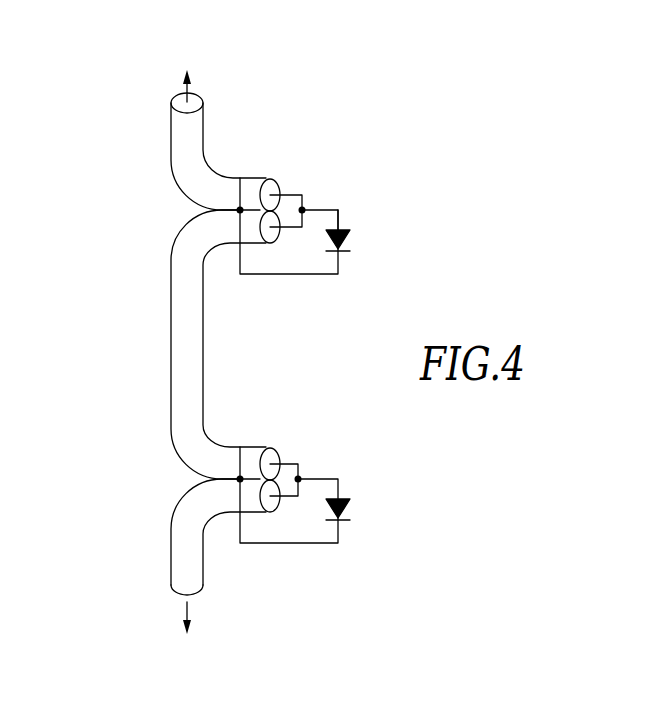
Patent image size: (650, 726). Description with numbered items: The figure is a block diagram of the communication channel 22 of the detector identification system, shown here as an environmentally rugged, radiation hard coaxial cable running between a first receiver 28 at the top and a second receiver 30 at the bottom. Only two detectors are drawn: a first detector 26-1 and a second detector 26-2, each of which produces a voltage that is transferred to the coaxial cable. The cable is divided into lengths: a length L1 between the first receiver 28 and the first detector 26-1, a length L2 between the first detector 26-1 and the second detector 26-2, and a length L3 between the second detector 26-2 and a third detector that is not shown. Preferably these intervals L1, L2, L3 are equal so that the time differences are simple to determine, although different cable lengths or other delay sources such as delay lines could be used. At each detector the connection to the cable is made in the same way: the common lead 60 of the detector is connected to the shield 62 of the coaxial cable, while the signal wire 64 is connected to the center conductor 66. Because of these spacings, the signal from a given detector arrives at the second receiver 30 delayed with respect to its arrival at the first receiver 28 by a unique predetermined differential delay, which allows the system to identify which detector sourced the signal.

The communication channel 22 is at (139, 384).
The first receiver 28 is at (183, 58).
The second receiver 30 is at (183, 647).
The cable length L1 is at (170, 124).
The cable length L2 is at (170, 329).
The cable length L3 is at (170, 562).
The common lead 60 is at (319, 276).
The shield 62 is at (243, 177).
The center conductor 66 is at (304, 208).
The signal wire 64 is at (340, 212).
The first detector 26-1 is at (347, 240).
The second detector 26-2 is at (348, 510).